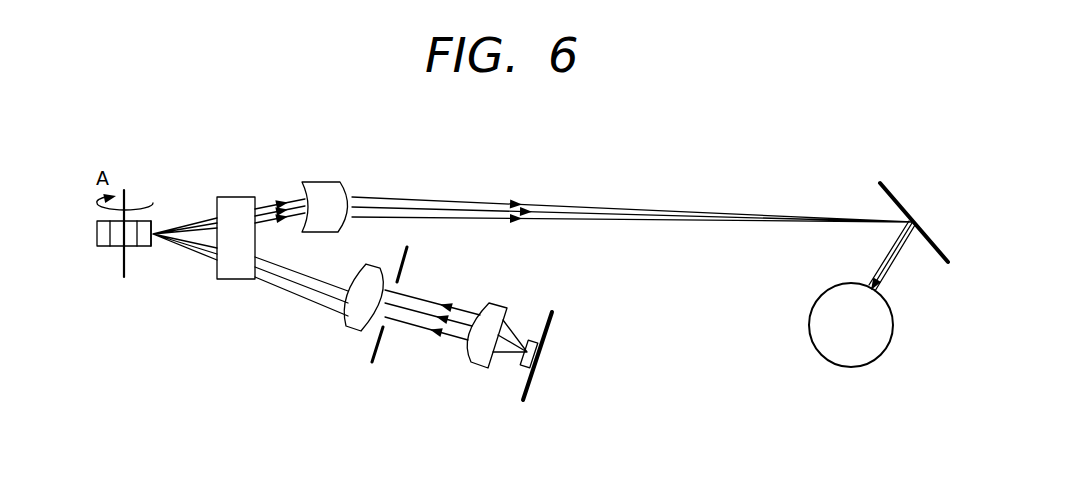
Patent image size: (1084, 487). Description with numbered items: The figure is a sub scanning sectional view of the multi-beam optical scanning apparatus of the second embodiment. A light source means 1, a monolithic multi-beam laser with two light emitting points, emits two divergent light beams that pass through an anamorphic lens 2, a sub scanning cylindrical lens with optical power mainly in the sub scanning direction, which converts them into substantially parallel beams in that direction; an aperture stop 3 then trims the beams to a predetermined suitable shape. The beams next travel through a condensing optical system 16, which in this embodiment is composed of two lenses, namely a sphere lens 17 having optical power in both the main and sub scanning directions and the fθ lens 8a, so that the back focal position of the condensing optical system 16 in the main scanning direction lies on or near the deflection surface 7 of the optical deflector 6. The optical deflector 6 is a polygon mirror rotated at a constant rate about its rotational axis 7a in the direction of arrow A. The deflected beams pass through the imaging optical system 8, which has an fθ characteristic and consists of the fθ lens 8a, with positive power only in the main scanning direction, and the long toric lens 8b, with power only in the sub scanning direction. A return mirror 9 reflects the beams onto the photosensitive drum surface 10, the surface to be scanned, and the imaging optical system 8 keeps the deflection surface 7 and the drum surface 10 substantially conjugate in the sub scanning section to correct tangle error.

The light source means 1 is at (530, 386).
The anamorphic lens 2 is at (471, 367).
The aperture stop 3 is at (403, 266).
The optical deflector 6 is at (105, 248).
The deflection surface 7 is at (163, 250).
The rotational axis 7a is at (124, 279).
The imaging optical system 8 is at (352, 127).
The fθ lens 8a is at (240, 197).
The long toric lens 8b is at (328, 191).
The return mirror 9 is at (900, 196).
The photosensitive drum surface 10 is at (808, 332).
The condensing optical system 16 is at (338, 386).
The sphere lens 17 is at (348, 327).